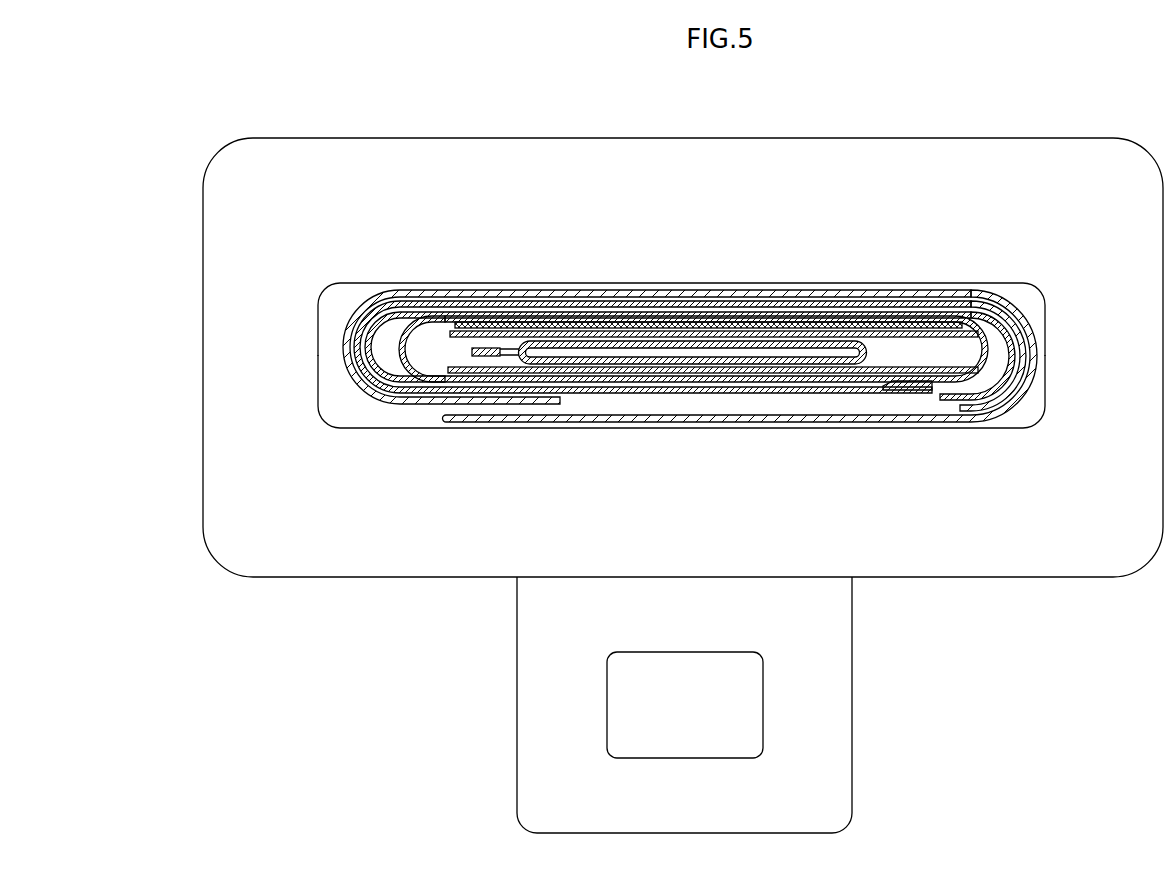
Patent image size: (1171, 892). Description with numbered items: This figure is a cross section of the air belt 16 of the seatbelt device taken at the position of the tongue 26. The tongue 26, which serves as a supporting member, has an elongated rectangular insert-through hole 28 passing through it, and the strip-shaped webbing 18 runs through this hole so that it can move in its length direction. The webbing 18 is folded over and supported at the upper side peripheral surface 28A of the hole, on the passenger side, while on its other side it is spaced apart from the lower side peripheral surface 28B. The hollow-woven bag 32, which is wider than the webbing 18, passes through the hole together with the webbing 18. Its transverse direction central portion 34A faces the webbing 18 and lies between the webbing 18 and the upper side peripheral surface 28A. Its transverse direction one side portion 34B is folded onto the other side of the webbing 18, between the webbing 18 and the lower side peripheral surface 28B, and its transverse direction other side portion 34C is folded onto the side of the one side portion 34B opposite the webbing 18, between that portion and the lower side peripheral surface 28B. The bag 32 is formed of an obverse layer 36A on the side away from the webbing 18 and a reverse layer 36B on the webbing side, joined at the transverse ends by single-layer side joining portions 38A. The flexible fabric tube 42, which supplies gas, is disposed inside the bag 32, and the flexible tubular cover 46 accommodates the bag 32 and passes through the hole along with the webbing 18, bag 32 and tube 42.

The tongue 26 is at (424, 138).
The insert-through hole 28 is at (643, 359).
The upper side peripheral surface 28A is at (996, 289).
The lower side peripheral surface 28B is at (992, 429).
The air belt 16 is at (352, 316).
The webbing 18 is at (447, 322).
The bag 32 is at (1006, 342).
The transverse direction central portion 34A is at (685, 301).
The transverse direction one side portion 34B is at (947, 384).
The transverse direction other side portion 34C is at (686, 423).
The obverse layer 36A is at (995, 368).
The reverse layer 36B is at (518, 332).
The side joining portions 38A is at (478, 352).
The tube 42 is at (870, 352).
The cover 46 is at (1022, 312).